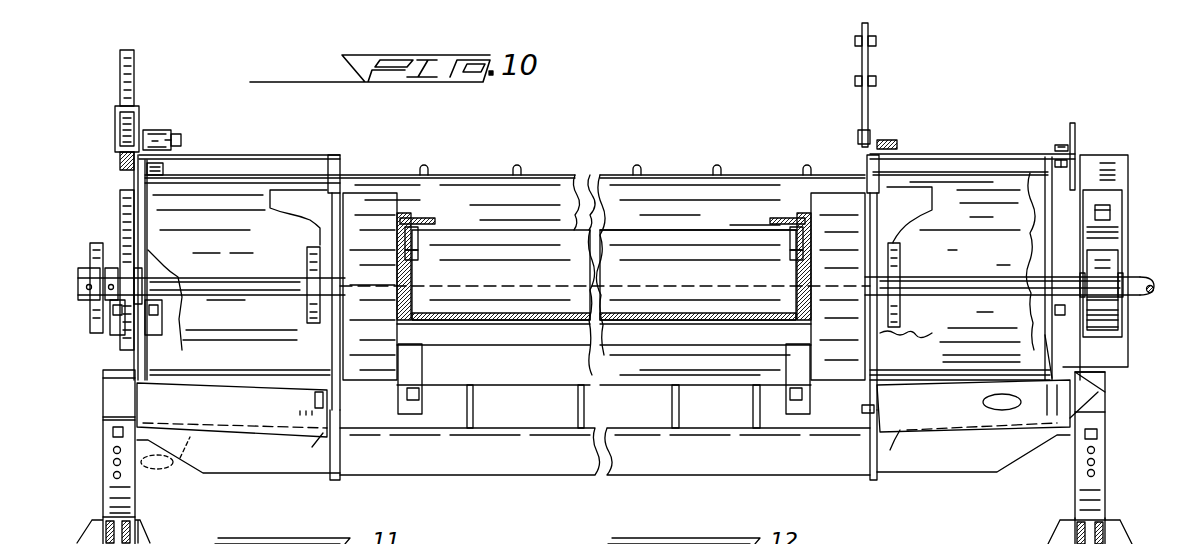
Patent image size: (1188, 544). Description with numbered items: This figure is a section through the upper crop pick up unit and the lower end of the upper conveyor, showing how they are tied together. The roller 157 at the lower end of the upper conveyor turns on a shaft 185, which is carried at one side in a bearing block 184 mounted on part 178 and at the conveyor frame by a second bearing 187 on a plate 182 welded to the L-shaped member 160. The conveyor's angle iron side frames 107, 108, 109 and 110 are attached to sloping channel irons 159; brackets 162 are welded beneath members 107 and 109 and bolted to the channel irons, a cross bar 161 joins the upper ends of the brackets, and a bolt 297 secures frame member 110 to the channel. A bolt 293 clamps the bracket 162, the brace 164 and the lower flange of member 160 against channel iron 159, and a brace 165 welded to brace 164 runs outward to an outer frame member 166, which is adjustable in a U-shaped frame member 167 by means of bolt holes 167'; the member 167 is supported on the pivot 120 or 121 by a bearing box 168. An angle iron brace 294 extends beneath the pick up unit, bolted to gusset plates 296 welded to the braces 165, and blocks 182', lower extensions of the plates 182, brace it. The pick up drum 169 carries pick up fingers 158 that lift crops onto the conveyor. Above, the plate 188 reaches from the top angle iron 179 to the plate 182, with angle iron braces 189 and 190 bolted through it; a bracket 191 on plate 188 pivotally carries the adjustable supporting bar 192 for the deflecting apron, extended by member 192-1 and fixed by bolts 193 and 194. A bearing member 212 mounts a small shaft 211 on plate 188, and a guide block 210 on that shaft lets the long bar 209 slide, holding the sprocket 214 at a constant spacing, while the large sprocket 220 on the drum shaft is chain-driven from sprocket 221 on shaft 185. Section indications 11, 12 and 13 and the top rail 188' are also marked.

The long bar 209 is at (135, 88).
The guide block 210 is at (139, 112).
The bearing member 212 is at (166, 128).
The small shaft 211 is at (181, 140).
The left top rail 188' is at (239, 142).
The top angle iron 179 is at (163, 166).
The large sprocket 220 is at (120, 200).
The sprocket 221 is at (118, 222).
The sprocket 214 is at (95, 245).
The shaft 185 is at (78, 284).
The second bearing 187 is at (300, 318).
The plate 182 is at (597, 277).
The blocks 182' is at (623, 455).
The channel irons 159 is at (385, 198).
The angle iron side frame 108 is at (430, 218).
The upper conveyor frame member 110 is at (772, 218).
The bolt 297 is at (418, 238).
The angle iron side frame member 107 is at (430, 312).
The angle iron side frame member 109 is at (780, 312).
The roller 157 is at (632, 228).
The pick up drum 169 is at (535, 178).
The cross bar 161 is at (672, 335).
The brackets 162 is at (422, 405).
The pick up fingers 158 is at (473, 412).
The angle iron brace 294 is at (510, 475).
The L-shaped member 160 is at (262, 375).
The bolt 293 is at (303, 402).
The gusset plates 296 is at (1029, 410).
The brace 165 is at (113, 420).
The brace 164 is at (903, 440).
The outer frame member 166 is at (107, 393).
The pivot 121 is at (100, 513).
The pivot 120 is at (1105, 505).
The U-shaped frame member 167 is at (604, 465).
The bolt holes 167' is at (617, 465).
The bearing box 168 is at (137, 517).
The section line 13 is at (182, 470).
The section line 11 is at (858, 132).
The section line 12 is at (895, 132).
The adjustable supporting bar 192 is at (868, 100).
The member 192-1 is at (876, 40).
The bolt 194 is at (876, 44).
The bolt 193 is at (876, 80).
The bracket 191 is at (880, 136).
The plate 188 is at (975, 251).
The angle iron brace 189 is at (1075, 135).
The angle iron brace 190 is at (1068, 157).
The part 178 is at (1120, 345).
The bearing block 184 is at (1118, 226).